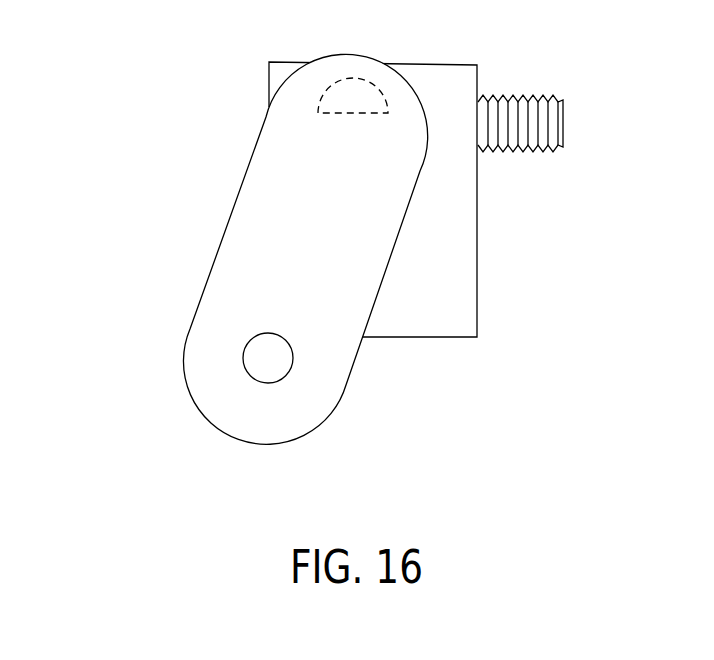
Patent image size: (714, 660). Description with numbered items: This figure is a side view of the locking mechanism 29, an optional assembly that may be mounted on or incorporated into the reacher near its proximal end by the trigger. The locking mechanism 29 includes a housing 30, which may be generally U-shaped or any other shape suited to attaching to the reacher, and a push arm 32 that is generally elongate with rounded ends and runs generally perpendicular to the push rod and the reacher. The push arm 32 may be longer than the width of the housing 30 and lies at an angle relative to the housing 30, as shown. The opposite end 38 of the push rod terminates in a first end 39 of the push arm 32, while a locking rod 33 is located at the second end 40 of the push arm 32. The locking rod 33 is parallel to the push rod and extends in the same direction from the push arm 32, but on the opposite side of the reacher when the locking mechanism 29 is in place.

The locking mechanism 29 is at (136, 144).
The housing 30 is at (455, 245).
The push arm 32 is at (336, 333).
The locking rod 33 is at (255, 360).
The opposite end of the push rod 38 is at (365, 82).
The first end of the push arm 39 is at (300, 93).
The second end of the push arm 40 is at (265, 415).